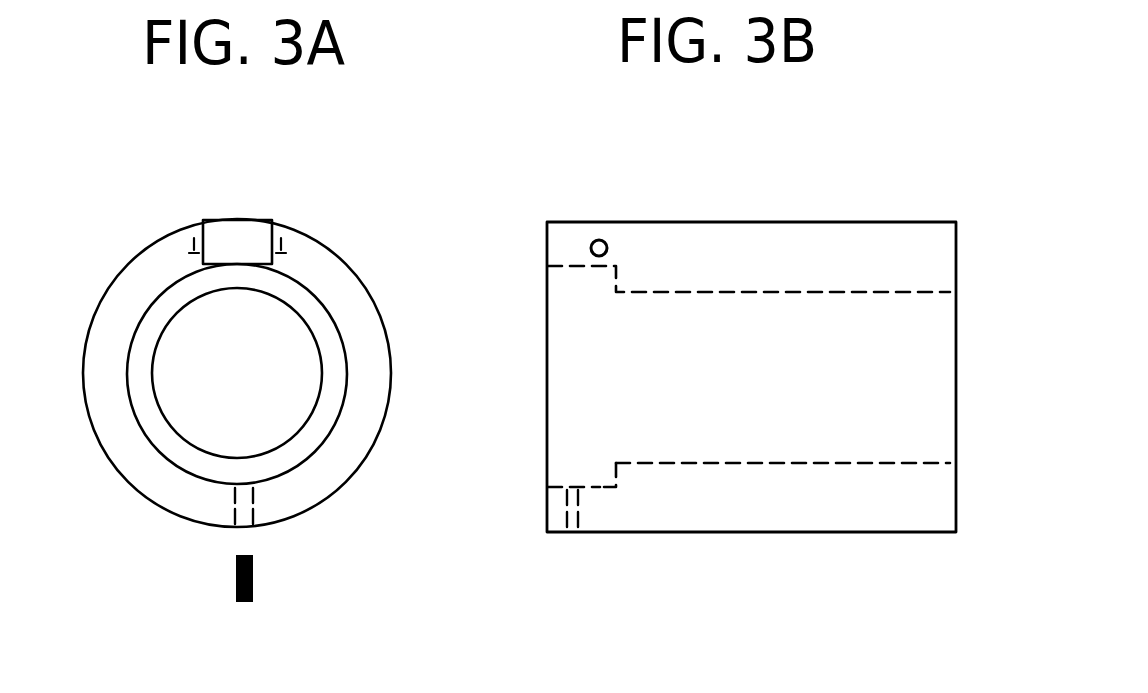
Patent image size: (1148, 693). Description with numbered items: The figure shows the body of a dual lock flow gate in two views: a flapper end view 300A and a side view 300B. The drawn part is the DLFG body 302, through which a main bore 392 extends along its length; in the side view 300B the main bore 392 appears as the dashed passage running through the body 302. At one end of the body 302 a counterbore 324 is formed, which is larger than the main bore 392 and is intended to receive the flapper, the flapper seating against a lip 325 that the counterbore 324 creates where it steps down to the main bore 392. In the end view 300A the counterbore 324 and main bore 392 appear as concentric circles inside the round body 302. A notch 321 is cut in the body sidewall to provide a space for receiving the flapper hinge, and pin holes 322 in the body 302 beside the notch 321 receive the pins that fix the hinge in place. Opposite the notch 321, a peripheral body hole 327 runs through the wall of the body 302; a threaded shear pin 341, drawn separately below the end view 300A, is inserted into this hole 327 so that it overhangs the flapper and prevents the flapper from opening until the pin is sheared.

In FIG. 3A, the dual lock flow gate (flapper end view) 300A is at (94, 181).
In FIG. 3B, the dual lock flow gate (side view) 300B is at (573, 151).
In FIG. 3A, the DLFG body 302 is at (368, 285).
In FIG. 3B, the DLFG body 302 is at (790, 220).
In FIG. 3A, the notch 321 is at (227, 228).
In FIG. 3A, the body pin hole 322 is at (286, 243).
In FIG. 3B, the body pin hole 322 is at (602, 240).
In FIG. 3A, the counterbore 324 is at (322, 428).
In FIG. 3B, the counterbore 324 is at (580, 487).
In FIG. 3B, the lip 325 is at (610, 480).
In FIG. 3A, the peripheral body hole 327 is at (255, 492).
In FIG. 3B, the peripheral body hole 327 is at (580, 512).
In FIG. 3A, the threaded shear pin 341 is at (253, 586).
In FIG. 3B, the main bore 392 is at (710, 460).